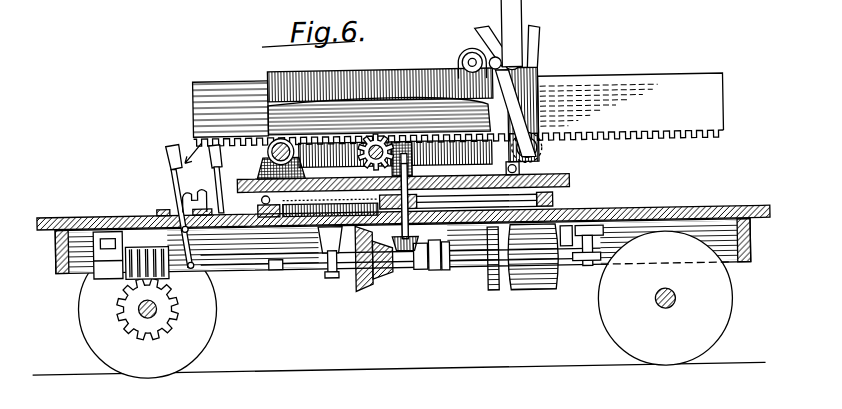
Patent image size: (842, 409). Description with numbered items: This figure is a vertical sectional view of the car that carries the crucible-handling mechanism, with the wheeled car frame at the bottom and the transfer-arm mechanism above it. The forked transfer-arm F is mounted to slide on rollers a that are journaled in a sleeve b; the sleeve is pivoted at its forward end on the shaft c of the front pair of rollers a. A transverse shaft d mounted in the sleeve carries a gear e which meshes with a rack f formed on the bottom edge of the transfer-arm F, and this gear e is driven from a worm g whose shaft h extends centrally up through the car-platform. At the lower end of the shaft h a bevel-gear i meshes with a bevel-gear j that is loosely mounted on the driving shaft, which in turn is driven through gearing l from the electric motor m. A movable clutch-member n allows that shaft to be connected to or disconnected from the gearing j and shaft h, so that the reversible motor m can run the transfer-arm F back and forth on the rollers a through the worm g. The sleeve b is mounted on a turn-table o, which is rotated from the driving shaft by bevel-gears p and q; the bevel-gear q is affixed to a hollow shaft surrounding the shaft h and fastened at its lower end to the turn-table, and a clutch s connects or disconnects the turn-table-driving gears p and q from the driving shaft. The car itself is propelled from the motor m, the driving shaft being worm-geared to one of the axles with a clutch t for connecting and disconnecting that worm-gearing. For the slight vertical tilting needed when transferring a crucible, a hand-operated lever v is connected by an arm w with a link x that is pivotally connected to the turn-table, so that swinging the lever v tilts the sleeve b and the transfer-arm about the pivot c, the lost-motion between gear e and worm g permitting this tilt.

The forked transfer-arm F is at (213, 95).
The gear e is at (360, 143).
The transverse shaft d is at (377, 146).
The sleeve b is at (400, 77).
The worm g is at (407, 143).
The rollers a is at (268, 156).
The arm w is at (496, 36).
The hand-operated lever v is at (527, 21).
The link x is at (502, 92).
The rack f is at (687, 148).
The turn-table o is at (570, 192).
The shaft of front rollers c is at (262, 166).
The clutch t is at (197, 279).
The worm shaft h is at (277, 278).
The clutch s is at (322, 278).
The bevel-gear p is at (360, 278).
The bevel-gear j is at (380, 280).
The movable clutch-member n is at (400, 273).
The bevel-gear i is at (412, 278).
The bevel-gear q is at (445, 276).
The gearing l is at (490, 298).
The electric motor m is at (540, 299).